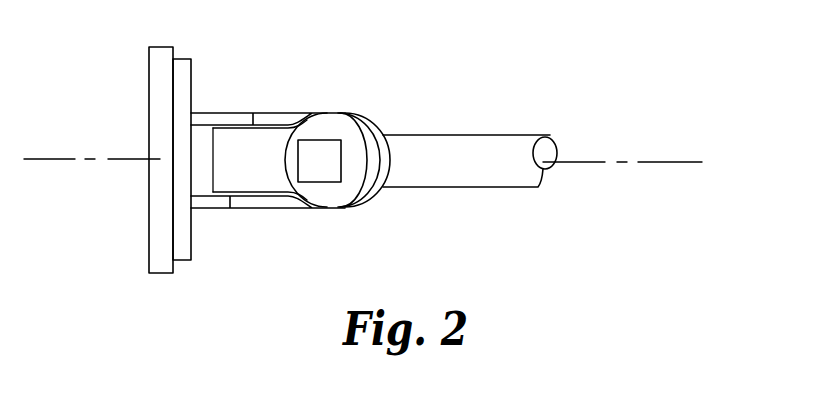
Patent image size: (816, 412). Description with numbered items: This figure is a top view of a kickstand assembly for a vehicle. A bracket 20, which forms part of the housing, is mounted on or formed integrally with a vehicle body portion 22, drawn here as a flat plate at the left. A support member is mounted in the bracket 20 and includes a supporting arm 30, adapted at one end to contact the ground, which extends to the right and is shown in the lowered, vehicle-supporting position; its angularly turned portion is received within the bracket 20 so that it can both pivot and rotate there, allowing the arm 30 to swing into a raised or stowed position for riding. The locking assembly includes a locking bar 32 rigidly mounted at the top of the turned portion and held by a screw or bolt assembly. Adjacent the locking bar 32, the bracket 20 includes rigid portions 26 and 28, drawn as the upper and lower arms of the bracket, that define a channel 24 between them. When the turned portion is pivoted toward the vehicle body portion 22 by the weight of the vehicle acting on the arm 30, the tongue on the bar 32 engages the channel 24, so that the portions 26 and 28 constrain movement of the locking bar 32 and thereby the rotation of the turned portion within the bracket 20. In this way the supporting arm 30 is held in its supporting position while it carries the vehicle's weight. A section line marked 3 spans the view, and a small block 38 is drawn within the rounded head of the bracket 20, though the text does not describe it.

The section line 3- 3 is at (57, 162).
The bracket 20 is at (368, 197).
The vehicle body portion 22 is at (157, 103).
The channel 24 is at (197, 178).
The rigid portion 26 is at (214, 118).
The rigid portion 28 is at (207, 203).
The supporting arm 30 is at (455, 142).
The locking bar 32 is at (268, 133).
The fastener block 38 is at (320, 182).